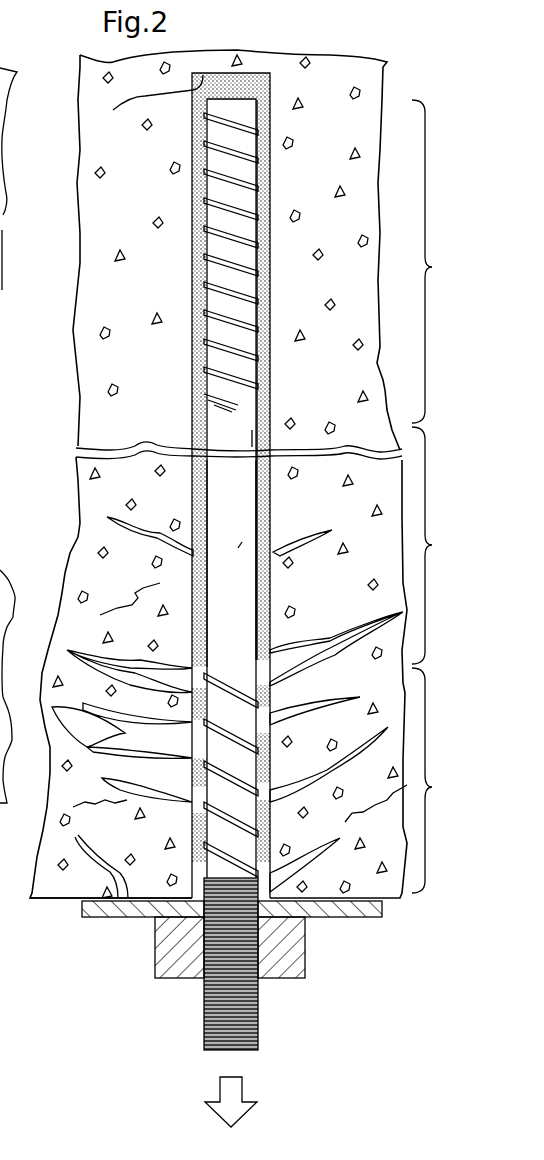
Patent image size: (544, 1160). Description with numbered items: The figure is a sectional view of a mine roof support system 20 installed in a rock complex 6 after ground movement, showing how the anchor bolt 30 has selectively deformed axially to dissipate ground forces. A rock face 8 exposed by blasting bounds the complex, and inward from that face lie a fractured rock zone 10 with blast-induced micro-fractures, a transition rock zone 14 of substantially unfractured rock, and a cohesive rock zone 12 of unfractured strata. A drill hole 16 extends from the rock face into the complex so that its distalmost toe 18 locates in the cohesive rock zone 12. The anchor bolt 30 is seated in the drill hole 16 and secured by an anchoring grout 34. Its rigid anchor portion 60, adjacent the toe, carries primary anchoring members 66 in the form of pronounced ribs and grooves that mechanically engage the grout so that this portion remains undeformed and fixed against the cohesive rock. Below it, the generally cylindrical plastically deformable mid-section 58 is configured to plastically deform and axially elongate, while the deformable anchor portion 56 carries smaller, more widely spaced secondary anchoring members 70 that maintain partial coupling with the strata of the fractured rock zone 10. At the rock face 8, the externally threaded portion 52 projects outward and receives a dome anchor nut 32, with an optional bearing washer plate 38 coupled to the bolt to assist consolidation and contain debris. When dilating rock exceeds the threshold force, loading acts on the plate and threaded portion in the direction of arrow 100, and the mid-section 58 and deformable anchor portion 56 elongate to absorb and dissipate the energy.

The rock complex 6 is at (319, 168).
The rock face 8 is at (37, 905).
The fractured rock zone 10 is at (440, 780).
The cohesive rock zone 12 is at (440, 261).
The transition rock zone 14 is at (440, 545).
The drill hole 16 is at (193, 201).
The distalmost toe 18 is at (152, 106).
The mine roof support system 20 is at (221, 434).
The anchor bolt 30 is at (246, 505).
The dome anchor nut 32 is at (163, 965).
The anchoring grout 34 is at (257, 408).
The bearing washer plate 38 is at (347, 915).
The externally threaded portion 52 is at (262, 1013).
The deformable anchor portion 56 is at (242, 732).
The plastically deformable mid-section 58 is at (238, 548).
The rigid anchor portion 60 is at (238, 308).
The primary anchoring members 66 is at (196, 310).
The secondary anchoring members 70 is at (197, 764).
The arrow 100 is at (233, 1090).